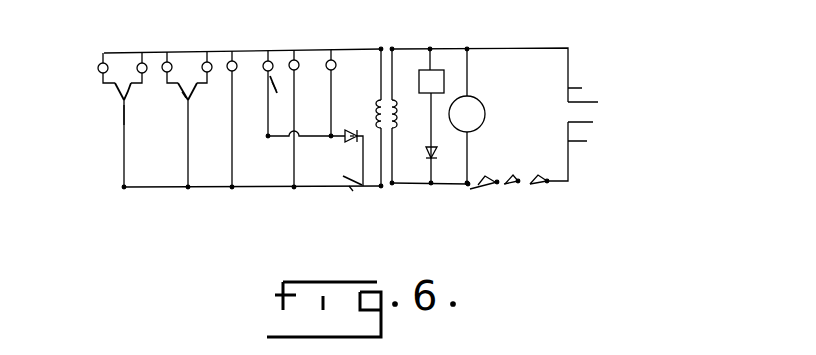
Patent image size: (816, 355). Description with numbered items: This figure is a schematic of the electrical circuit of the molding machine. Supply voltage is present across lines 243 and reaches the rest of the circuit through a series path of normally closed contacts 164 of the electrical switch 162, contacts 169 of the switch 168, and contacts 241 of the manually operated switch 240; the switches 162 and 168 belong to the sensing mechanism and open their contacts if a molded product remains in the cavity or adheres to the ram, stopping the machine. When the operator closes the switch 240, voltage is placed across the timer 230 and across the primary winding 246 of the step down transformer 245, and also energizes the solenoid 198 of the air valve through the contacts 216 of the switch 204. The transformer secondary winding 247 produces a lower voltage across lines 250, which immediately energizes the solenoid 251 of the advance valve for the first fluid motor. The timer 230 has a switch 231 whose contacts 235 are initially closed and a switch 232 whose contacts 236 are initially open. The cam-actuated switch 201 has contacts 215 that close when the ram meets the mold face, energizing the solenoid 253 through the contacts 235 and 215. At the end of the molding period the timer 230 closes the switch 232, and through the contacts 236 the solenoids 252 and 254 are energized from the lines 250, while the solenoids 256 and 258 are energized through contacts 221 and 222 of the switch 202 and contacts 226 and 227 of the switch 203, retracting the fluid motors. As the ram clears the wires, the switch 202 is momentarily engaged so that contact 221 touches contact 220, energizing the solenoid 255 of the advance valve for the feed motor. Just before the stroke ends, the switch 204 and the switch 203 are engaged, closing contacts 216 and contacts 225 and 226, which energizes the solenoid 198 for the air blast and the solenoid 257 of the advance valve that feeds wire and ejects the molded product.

The solenoid 258 is at (99, 65).
The solenoid 257 is at (143, 63).
The solenoid 256 is at (169, 62).
The solenoid 255 is at (209, 62).
The solenoid 254 is at (236, 62).
The solenoid 253 is at (271, 62).
The solenoid 252 is at (297, 61).
The solenoid 251 is at (333, 60).
The lines 250 is at (380, 48).
The contact 227 is at (115, 85).
The contact 226 is at (126, 97).
The contact 225 is at (128, 99).
The switch 203 is at (125, 118).
The contact 222 is at (178, 85).
The contact 221 is at (184, 95).
The contact 220 is at (195, 85).
The switch 202 is at (191, 100).
The contacts 215 is at (265, 85).
The switch 201 is at (262, 89).
The contacts 235 is at (349, 142).
The switch 231 is at (353, 129).
The contacts 236 is at (353, 187).
The switch 232 is at (366, 190).
The secondary winding 247 is at (377, 108).
The primary winding 246 is at (418, 116).
The step down transformer 245 is at (388, 168).
The solenoid 198 is at (455, 70).
The timer 230 is at (481, 106).
The contacts 216 is at (425, 150).
The switch 204 is at (456, 150).
The contacts 241 is at (489, 168).
The manually operated switch 240 is at (484, 191).
The contacts 169 is at (517, 168).
The switch 168 is at (513, 188).
The contacts 164 is at (545, 168).
The electrical switch 162 is at (547, 186).
The lines 243 is at (587, 141).